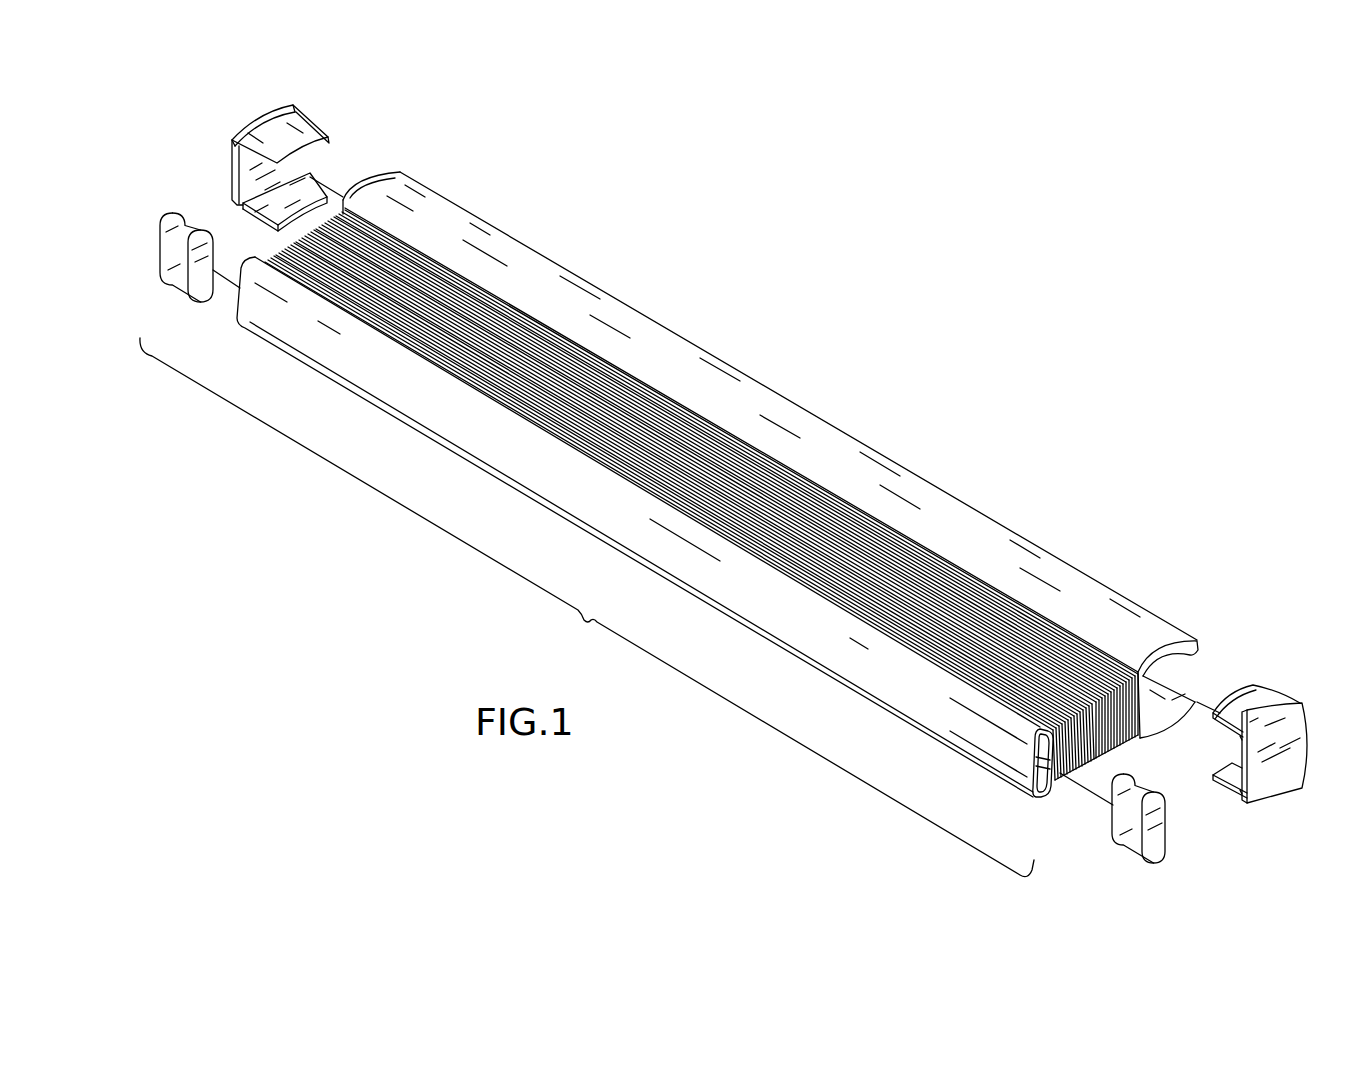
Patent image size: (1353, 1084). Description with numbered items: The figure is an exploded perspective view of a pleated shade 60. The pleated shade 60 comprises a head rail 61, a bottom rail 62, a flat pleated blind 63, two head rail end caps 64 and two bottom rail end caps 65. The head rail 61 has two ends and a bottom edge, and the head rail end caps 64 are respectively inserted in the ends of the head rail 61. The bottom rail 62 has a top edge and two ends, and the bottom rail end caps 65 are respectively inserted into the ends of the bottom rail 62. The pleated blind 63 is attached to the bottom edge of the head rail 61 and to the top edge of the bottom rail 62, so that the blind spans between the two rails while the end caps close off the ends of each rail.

The pleated shade 60 is at (852, 270).
The head rail 61 is at (960, 523).
The bottom rail 62 is at (875, 675).
The flat pleated blind 63 is at (1040, 647).
The head rail end caps 64 is at (297, 130).
The bottom rail end caps 65 is at (173, 273).